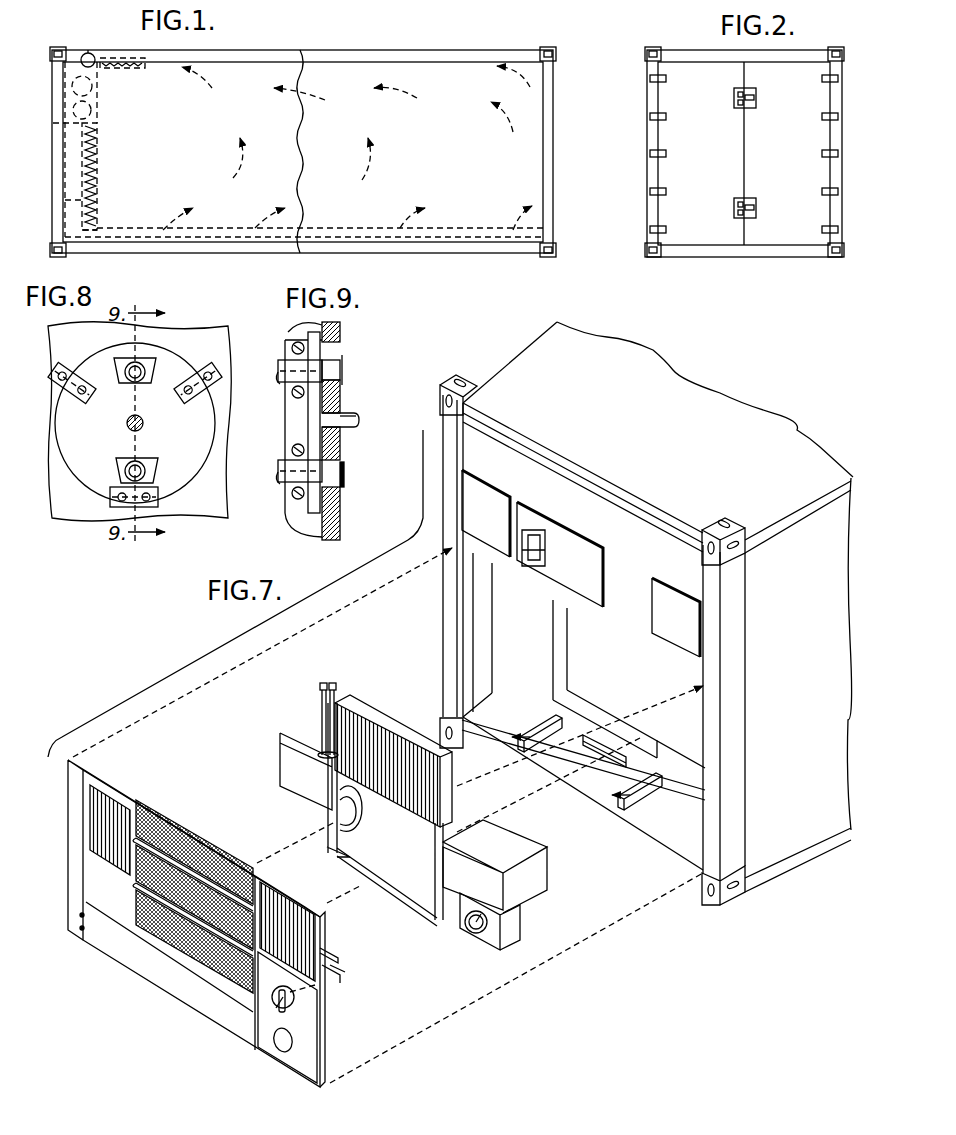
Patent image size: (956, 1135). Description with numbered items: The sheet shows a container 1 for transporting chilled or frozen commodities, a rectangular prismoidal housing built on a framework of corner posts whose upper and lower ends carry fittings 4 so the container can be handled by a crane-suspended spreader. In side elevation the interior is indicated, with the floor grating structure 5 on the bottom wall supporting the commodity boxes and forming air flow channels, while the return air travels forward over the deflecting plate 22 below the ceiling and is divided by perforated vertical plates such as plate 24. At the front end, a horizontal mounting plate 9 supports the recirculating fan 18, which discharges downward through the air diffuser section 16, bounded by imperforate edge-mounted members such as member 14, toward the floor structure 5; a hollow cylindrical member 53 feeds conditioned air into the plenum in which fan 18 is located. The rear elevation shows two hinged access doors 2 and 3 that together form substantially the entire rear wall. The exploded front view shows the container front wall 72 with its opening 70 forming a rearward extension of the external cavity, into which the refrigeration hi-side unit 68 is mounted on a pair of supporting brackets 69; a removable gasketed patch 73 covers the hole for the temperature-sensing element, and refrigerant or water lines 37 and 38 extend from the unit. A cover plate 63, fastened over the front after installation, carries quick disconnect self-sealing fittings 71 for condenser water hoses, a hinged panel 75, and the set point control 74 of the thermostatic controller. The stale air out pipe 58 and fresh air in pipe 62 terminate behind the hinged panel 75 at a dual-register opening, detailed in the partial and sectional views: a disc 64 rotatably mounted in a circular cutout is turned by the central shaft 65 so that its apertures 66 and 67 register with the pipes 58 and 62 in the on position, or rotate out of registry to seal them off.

In FIG. 1, the container 1 is at (452, 49).
In FIG. 2, the container 1 is at (692, 49).
In FIG. 7, the container 1 is at (698, 392).
In FIG. 2, the hinged access door 2 is at (775, 245).
In FIG. 2, the hinged access door 3 is at (712, 245).
In FIG. 1, the fittings 4 is at (60, 47).
In FIG. 2, the fittings 4 is at (652, 47).
In FIG. 7, the fittings 4 is at (443, 383).
In FIG. 1, the floor grating structure 5 is at (217, 229).
In FIG. 1, the fan bed plate or mounting plate 9 is at (63, 130).
In FIG. 1, the imperforate edge-mounted member 14 is at (100, 226).
In FIG. 1, the air diffuser section 16 is at (97, 210).
In FIG. 1, the air delivery or recirculating fan 18 is at (92, 110).
In FIG. 1, the deflecting plate 22 is at (136, 69).
In FIG. 1, the perforated vertical plate 24 is at (93, 55).
In FIG. 7, the refrigerant line 37 is at (320, 697).
In FIG. 7, the refrigerant line 38 is at (332, 683).
In FIG. 1, the hollow cylindrical member 53 is at (93, 88).
In FIG. 8, the stale air out pipe 58 is at (120, 376).
In FIG. 9, the stale air out pipe 58 is at (280, 378).
In FIG. 7, the stale air out pipe 58 is at (328, 952).
In FIG. 8, the fresh air in pipe 62 is at (120, 485).
In FIG. 9, the fresh air in pipe 62 is at (280, 482).
In FIG. 7, the fresh air in pipe 62 is at (340, 977).
In FIG. 7, the cover plate 63 is at (212, 1008).
In FIG. 8, the disc 64 is at (93, 362).
In FIG. 9, the disc 64 is at (342, 437).
In FIG. 7, the disc 64 is at (294, 999).
In FIG. 8, the central shaft 65 is at (127, 423).
In FIG. 9, the central shaft 65 is at (350, 413).
In FIG. 7, the central shaft 65 is at (270, 1000).
In FIG. 8, the aperture 66 is at (142, 384).
In FIG. 9, the aperture 66 is at (341, 366).
In FIG. 8, the aperture 67 is at (150, 470).
In FIG. 9, the aperture 67 is at (341, 475).
In FIG. 7, the refrigeration hi-side unit 68 is at (373, 700).
In FIG. 7, the supporting brackets 69 is at (530, 717).
In FIG. 1, the opening 70 is at (80, 196).
In FIG. 7, the opening 70 is at (583, 700).
In FIG. 7, the quick disconnect self-sealing fittings 71 is at (80, 917).
In FIG. 1, the front wall 72 is at (73, 157).
In FIG. 7, the front wall 72 is at (507, 600).
In FIG. 7, the removable gasketed patch 73 is at (590, 735).
In FIG. 7, the set point control 74 is at (473, 932).
In FIG. 8, the hinged panel 75 is at (195, 335).
In FIG. 9, the hinged panel 75 is at (340, 328).
In FIG. 7, the hinged panel 75 is at (276, 1048).